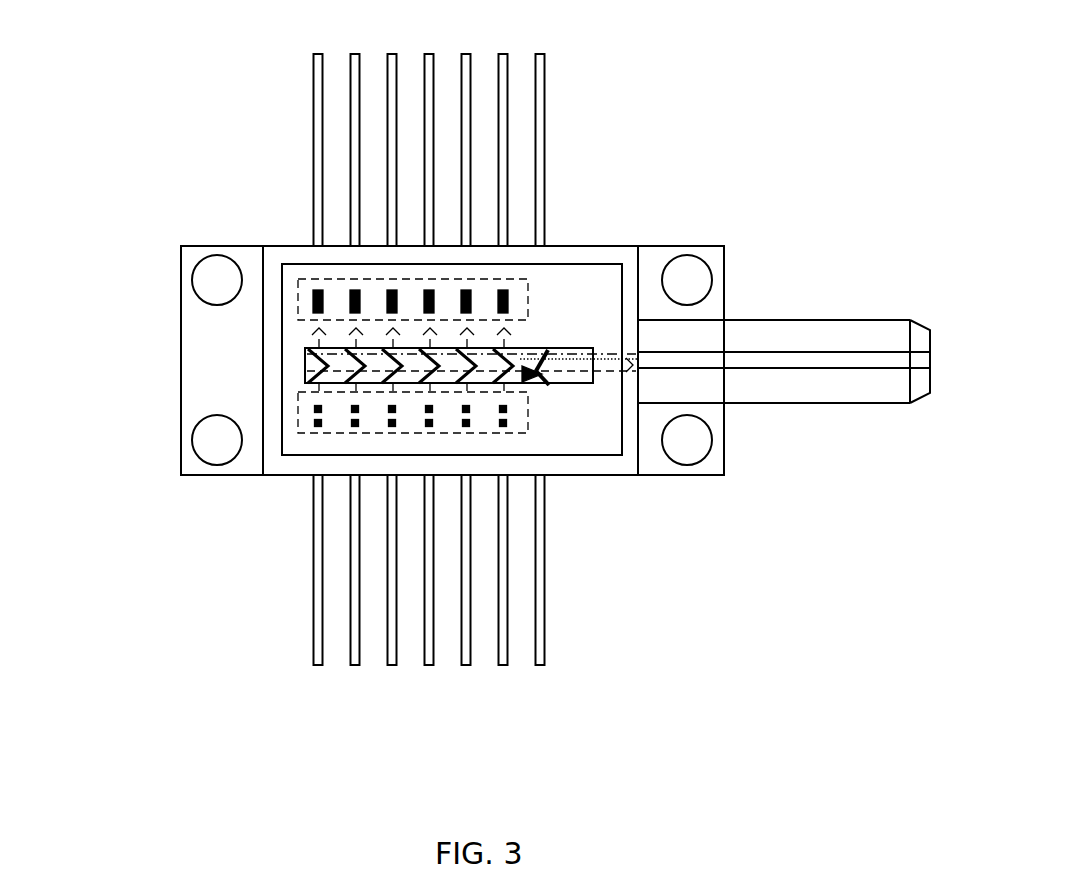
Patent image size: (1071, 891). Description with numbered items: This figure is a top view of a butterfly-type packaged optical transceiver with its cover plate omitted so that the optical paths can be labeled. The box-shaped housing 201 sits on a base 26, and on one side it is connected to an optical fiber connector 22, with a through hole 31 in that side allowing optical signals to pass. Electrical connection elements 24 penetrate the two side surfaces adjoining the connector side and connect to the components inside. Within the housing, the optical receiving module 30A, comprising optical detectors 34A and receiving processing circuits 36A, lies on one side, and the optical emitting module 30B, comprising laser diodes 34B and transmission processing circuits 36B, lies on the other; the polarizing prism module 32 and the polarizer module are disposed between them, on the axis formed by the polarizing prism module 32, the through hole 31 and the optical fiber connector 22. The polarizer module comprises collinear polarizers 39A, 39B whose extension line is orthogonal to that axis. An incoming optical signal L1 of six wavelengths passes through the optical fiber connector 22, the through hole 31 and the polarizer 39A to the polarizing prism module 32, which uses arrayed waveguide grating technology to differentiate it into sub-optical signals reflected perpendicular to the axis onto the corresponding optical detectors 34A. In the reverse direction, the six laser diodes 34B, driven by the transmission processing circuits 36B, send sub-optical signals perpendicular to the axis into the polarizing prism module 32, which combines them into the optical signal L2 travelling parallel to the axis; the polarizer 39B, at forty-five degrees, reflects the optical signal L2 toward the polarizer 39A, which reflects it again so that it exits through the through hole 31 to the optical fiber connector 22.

The optical fiber connector 22 is at (834, 302).
The electrical connection elements 24 is at (550, 103).
The base 26 is at (205, 245).
The box-shaped housing 201 is at (580, 245).
The optical receiving module 30A is at (567, 289).
The optical emitting module 30B is at (530, 398).
The through hole 31 is at (631, 380).
The polarizing prism module 32 is at (305, 365).
The optical detectors 34A is at (310, 311).
The laser diodes 34B is at (310, 407).
The receiving processing circuits 36A is at (310, 291).
The transmission processing circuits 36B is at (310, 430).
The polarizer 39A is at (541, 352).
The polarizer 39B is at (541, 382).
The optical signal L1 is at (607, 353).
The optical signal L2 is at (337, 378).